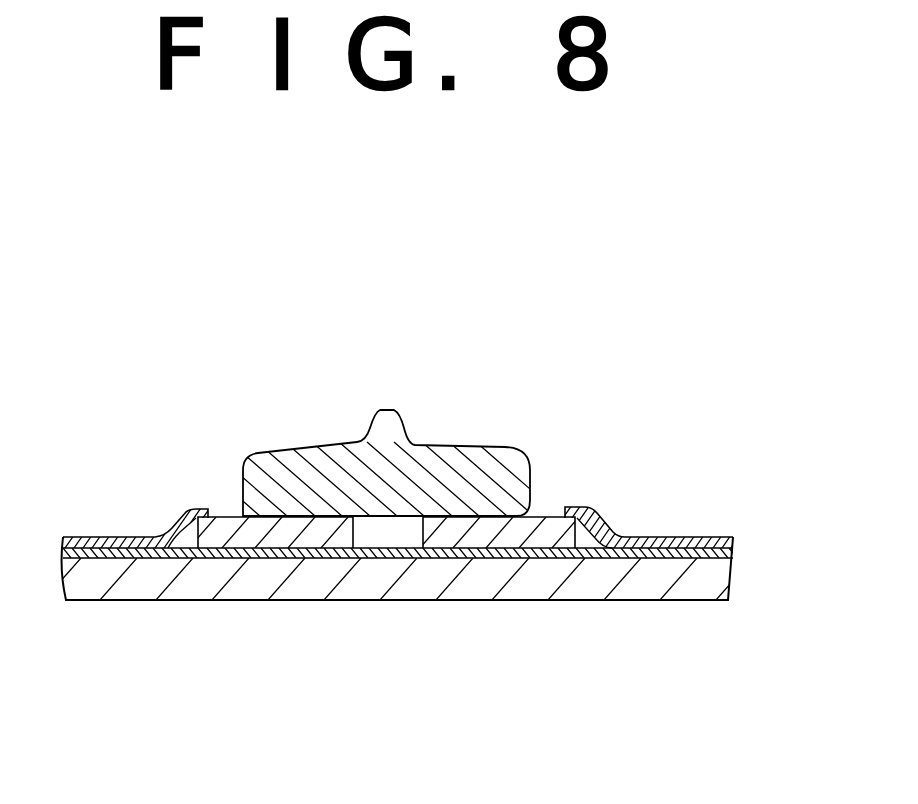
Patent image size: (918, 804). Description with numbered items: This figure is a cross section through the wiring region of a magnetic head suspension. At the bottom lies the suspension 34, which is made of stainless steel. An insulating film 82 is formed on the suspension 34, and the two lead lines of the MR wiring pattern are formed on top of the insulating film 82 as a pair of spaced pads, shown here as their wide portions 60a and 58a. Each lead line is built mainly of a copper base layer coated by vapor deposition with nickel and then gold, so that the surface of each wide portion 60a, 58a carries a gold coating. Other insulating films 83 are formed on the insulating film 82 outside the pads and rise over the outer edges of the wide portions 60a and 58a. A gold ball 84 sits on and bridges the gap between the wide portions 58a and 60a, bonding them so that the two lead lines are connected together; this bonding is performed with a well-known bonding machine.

The suspension 34 is at (421, 587).
The insulating film 82 is at (705, 557).
The other insulating films 83 is at (683, 537).
The wide portion 60a is at (230, 527).
The wide portion 58a is at (542, 525).
The gold ball 84 is at (348, 450).